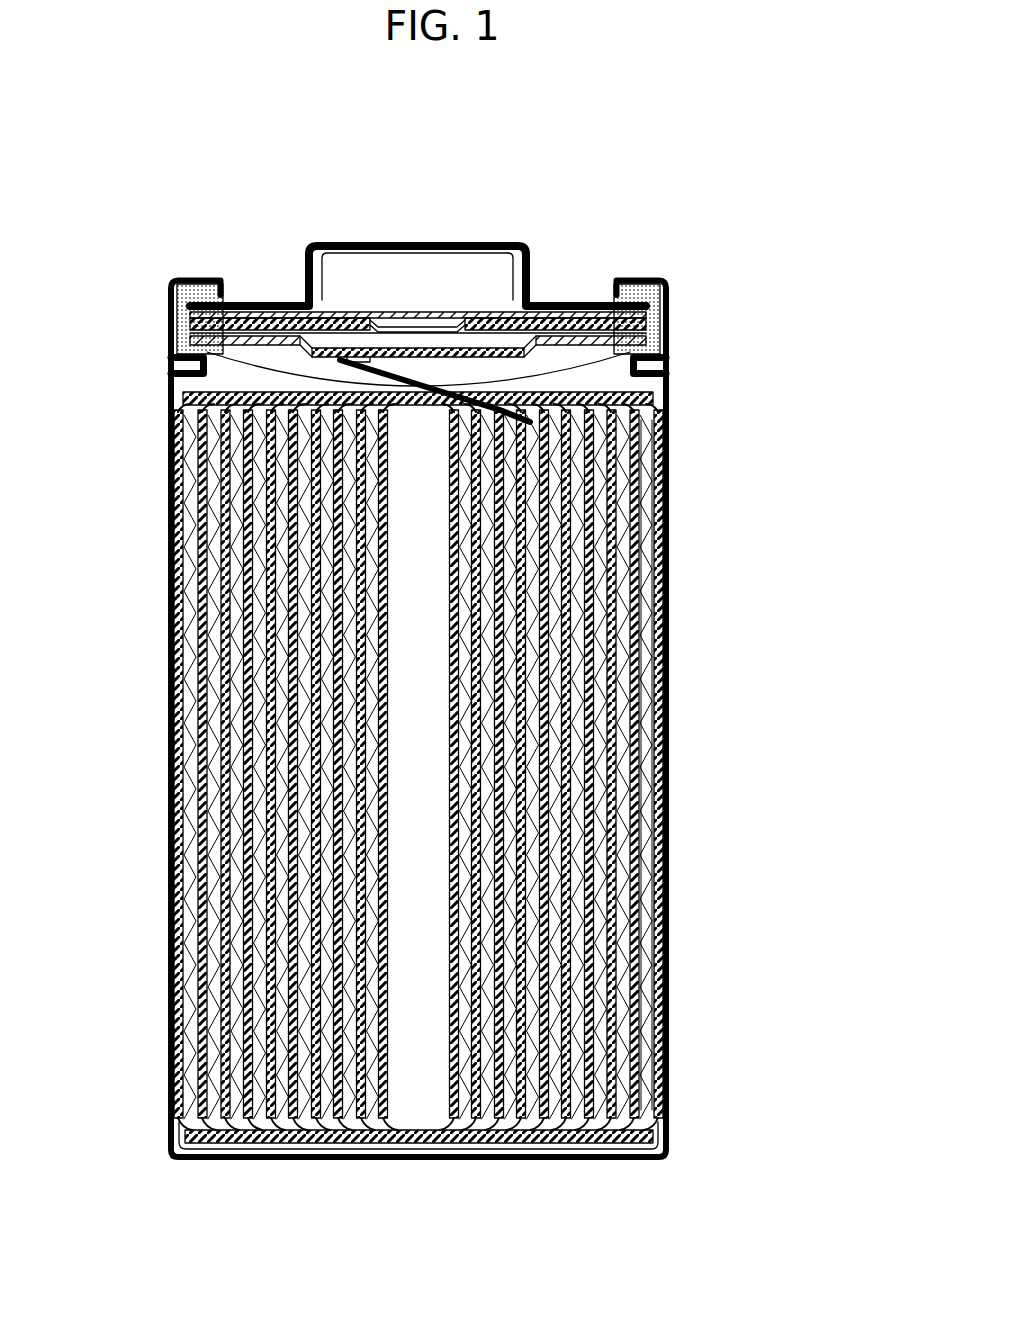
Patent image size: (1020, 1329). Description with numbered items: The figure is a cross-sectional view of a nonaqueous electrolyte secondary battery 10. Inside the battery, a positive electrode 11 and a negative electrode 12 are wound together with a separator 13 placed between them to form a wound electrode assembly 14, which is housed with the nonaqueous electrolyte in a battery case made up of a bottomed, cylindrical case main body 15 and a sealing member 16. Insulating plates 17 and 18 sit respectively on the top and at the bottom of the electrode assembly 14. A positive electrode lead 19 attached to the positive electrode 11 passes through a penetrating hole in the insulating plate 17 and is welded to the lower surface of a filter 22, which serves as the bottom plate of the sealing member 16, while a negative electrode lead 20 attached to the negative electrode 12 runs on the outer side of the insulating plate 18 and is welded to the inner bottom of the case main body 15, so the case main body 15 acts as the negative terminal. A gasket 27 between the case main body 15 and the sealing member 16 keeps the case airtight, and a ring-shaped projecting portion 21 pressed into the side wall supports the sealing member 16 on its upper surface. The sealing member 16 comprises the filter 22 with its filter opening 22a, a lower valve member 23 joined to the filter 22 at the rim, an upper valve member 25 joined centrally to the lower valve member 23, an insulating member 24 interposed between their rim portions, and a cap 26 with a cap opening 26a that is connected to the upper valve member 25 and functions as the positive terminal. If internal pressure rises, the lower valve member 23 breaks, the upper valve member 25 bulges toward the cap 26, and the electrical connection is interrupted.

The nonaqueous electrolyte secondary battery 10 is at (660, 126).
The positive electrode 11 is at (629, 842).
The negative electrode 12 is at (645, 873).
The separator 13 is at (636, 902).
The wound electrode assembly 14 is at (760, 825).
The case main body 15 is at (680, 277).
The sealing member 16 is at (531, 238).
The insulating plate 17 is at (657, 400).
The insulating plate 18 is at (662, 1142).
The positive electrode lead 19 is at (183, 347).
The negative electrode lead 20 is at (180, 1140).
The projecting portion 21 is at (176, 376).
The filter 22 is at (425, 348).
The filter opening 22a is at (470, 358).
The lower valve member 23 is at (320, 318).
The insulating member 24 is at (252, 312).
The upper valve member 25 is at (358, 333).
The cap 26 is at (496, 247).
The cap opening 26a is at (527, 268).
The gasket 27 is at (662, 300).